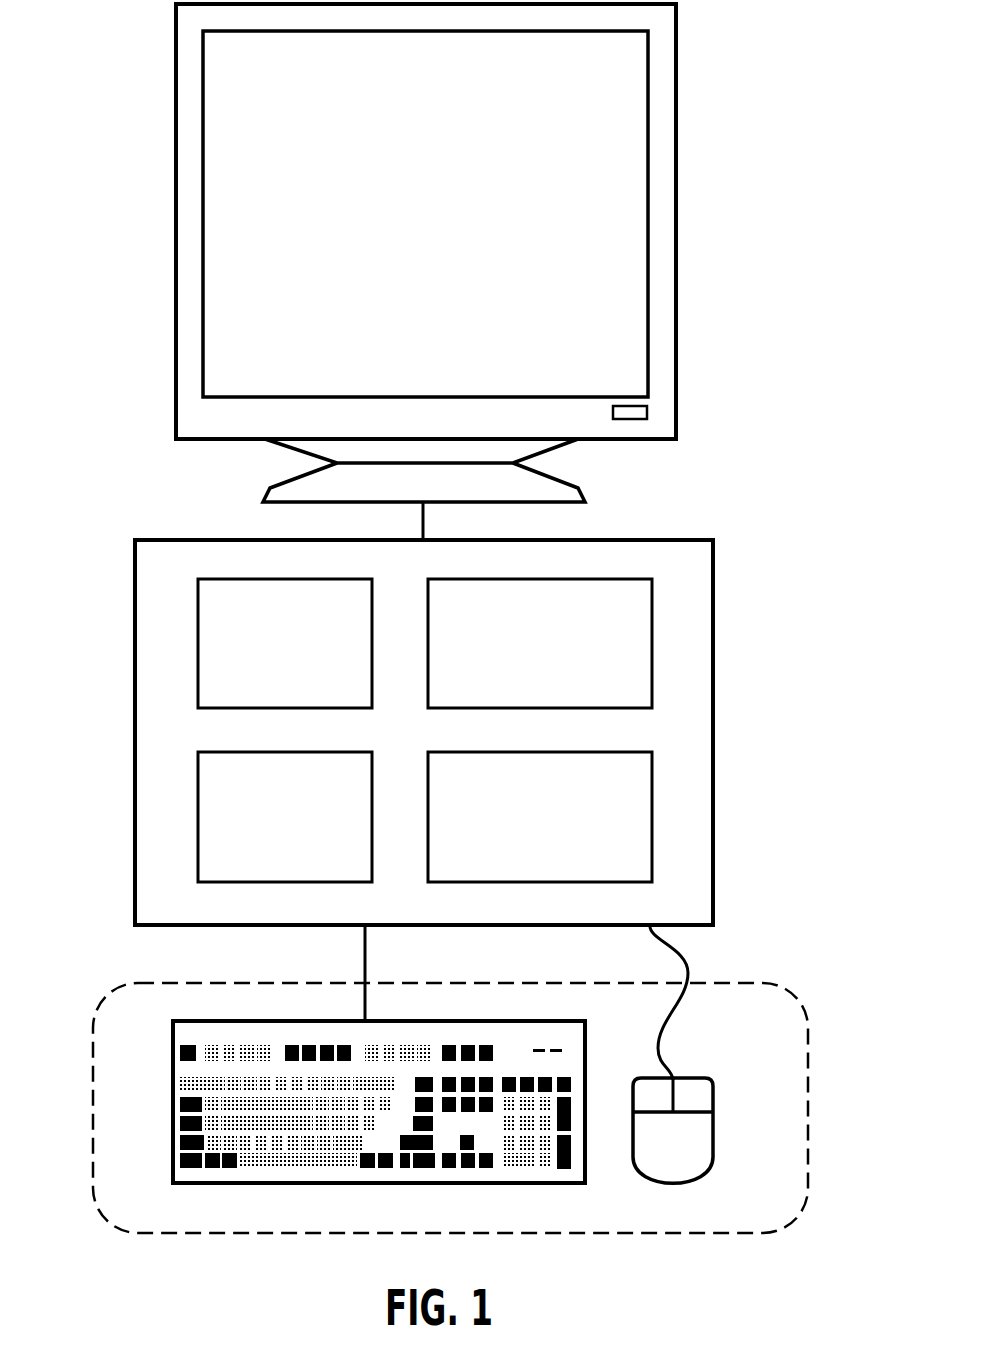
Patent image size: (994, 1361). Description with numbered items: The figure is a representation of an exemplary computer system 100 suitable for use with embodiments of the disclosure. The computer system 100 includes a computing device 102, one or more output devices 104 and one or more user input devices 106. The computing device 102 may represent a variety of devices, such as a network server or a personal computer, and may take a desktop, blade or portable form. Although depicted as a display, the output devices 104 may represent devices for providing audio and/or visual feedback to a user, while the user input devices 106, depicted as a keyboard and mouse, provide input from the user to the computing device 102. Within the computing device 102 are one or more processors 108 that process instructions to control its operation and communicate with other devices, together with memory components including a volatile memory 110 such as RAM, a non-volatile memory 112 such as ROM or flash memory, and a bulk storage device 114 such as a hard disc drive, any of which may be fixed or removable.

The computer system 100 is at (778, 765).
The computing device 102 is at (232, 540).
The output devices 104 is at (176, 398).
The user input devices 106 is at (730, 982).
The processors 108 is at (263, 671).
The volatile memory 110 is at (263, 842).
The non-volatile memory 112 is at (518, 842).
The bulk storage device 114 is at (520, 671).